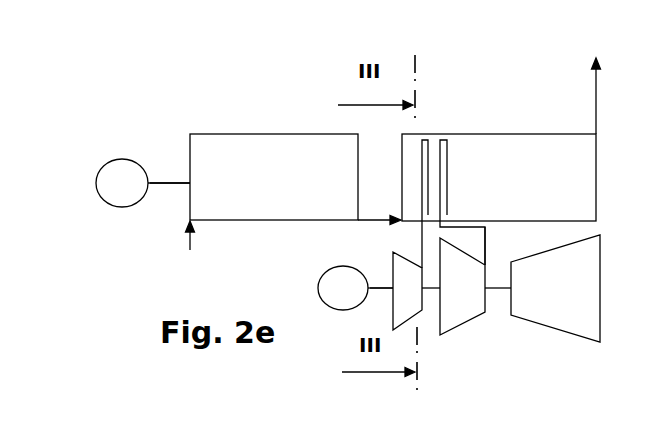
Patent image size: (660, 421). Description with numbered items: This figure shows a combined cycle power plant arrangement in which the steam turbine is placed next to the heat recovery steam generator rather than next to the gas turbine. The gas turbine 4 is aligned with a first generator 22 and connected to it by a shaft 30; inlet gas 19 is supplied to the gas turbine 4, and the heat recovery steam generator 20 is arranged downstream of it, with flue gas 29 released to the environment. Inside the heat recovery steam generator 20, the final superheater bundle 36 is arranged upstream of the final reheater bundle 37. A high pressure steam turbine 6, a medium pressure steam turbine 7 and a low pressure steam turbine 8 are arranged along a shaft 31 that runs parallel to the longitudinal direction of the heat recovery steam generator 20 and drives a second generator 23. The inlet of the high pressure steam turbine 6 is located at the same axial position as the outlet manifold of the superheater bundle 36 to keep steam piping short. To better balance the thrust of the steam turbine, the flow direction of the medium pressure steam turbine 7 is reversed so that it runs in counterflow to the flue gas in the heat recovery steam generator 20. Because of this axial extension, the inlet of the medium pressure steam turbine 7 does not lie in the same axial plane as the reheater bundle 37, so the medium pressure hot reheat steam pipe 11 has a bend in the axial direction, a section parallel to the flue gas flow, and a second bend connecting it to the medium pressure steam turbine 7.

The gas turbine 4 is at (286, 193).
The high pressure steam turbine 6 is at (413, 297).
The medium pressure steam turbine 7 is at (472, 297).
The low pressure steam turbine 8 is at (548, 297).
The medium pressure hot reheat steam pipe 11 is at (485, 248).
The inlet gas 19 is at (181, 245).
The heat recovery steam generator 20 is at (528, 195).
The first generator 22 is at (143, 183).
The second generator 23 is at (355, 288).
The flue gas 29 is at (580, 96).
The shaft 30 is at (177, 173).
The shaft 31 is at (389, 286).
The final superheater bundle 36 is at (425, 140).
The final reheater bundle 37 is at (447, 140).